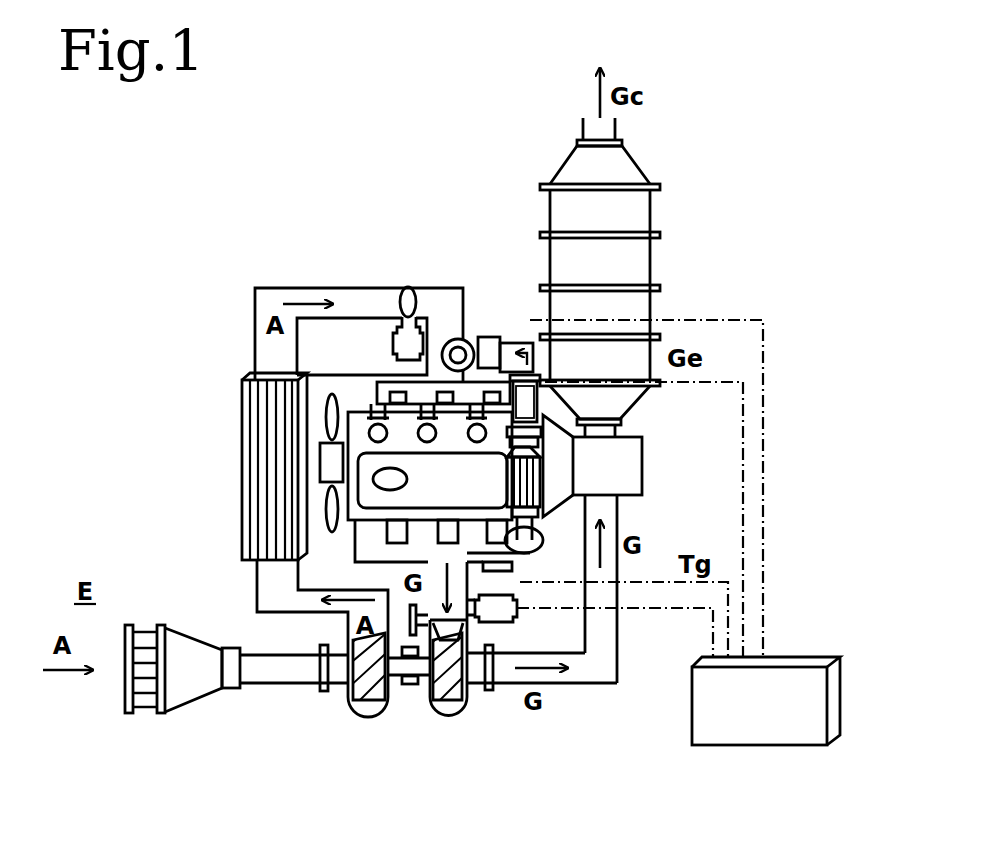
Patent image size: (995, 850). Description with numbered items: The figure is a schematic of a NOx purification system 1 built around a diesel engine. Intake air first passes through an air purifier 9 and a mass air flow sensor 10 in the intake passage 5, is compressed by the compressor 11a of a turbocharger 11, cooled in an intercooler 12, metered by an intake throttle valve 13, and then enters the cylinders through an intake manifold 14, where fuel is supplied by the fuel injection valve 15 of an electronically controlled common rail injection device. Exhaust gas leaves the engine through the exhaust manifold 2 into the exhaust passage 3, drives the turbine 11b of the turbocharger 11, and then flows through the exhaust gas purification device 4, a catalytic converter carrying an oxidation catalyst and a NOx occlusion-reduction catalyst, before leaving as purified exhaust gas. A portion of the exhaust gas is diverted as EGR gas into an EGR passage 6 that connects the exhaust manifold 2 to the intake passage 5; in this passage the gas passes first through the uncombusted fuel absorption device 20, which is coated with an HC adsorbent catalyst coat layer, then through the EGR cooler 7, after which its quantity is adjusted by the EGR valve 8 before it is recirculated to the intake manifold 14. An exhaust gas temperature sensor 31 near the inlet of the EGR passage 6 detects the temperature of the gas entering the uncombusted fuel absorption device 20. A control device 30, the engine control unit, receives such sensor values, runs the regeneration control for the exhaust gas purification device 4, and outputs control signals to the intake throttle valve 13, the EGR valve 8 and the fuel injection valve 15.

The NOx purification system 1 is at (390, 212).
The exhaust manifold 2 is at (354, 549).
The exhaust passage 3 is at (587, 687).
The exhaust gas purification device 4 is at (640, 217).
The intake passage 5 is at (373, 288).
The EGR passage 6 is at (665, 356).
The EGR cooler 7 is at (528, 410).
The EGR valve 8 is at (487, 338).
The air purifier 9 is at (198, 675).
The mass air flow sensor 10 is at (228, 677).
The turbocharger 11 is at (408, 668).
The compressor 11a is at (353, 707).
The turbine 11b is at (460, 707).
The intercooler 12 is at (250, 453).
The intake throttle valve 13 is at (397, 340).
The intake manifold 14 is at (368, 387).
The fuel injection valve 15 is at (370, 437).
The uncombusted fuel absorption device 20 is at (543, 473).
The control device 30 is at (780, 663).
The exhaust gas temperature sensor 31 is at (497, 571).